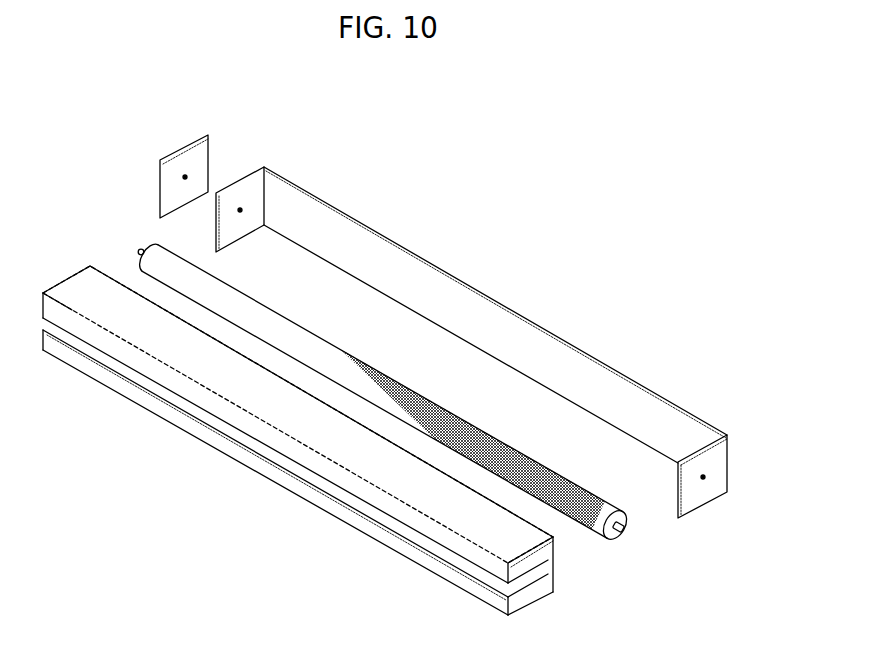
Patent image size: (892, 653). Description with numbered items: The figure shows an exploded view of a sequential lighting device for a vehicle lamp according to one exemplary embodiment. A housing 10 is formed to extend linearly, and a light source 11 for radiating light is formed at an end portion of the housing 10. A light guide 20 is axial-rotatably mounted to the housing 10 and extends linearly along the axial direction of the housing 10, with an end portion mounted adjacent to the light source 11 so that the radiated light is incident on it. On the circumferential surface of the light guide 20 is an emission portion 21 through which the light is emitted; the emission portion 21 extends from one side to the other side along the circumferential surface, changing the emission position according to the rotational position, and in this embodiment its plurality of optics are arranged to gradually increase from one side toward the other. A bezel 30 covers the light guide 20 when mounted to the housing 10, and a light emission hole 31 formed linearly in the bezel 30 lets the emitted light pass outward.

The housing 10 is at (516, 295).
The light source 11 is at (177, 167).
The light guide 20 is at (633, 541).
The emission portion 21 is at (600, 522).
The bezel 30 is at (307, 536).
The light emission hole 31 is at (217, 430).